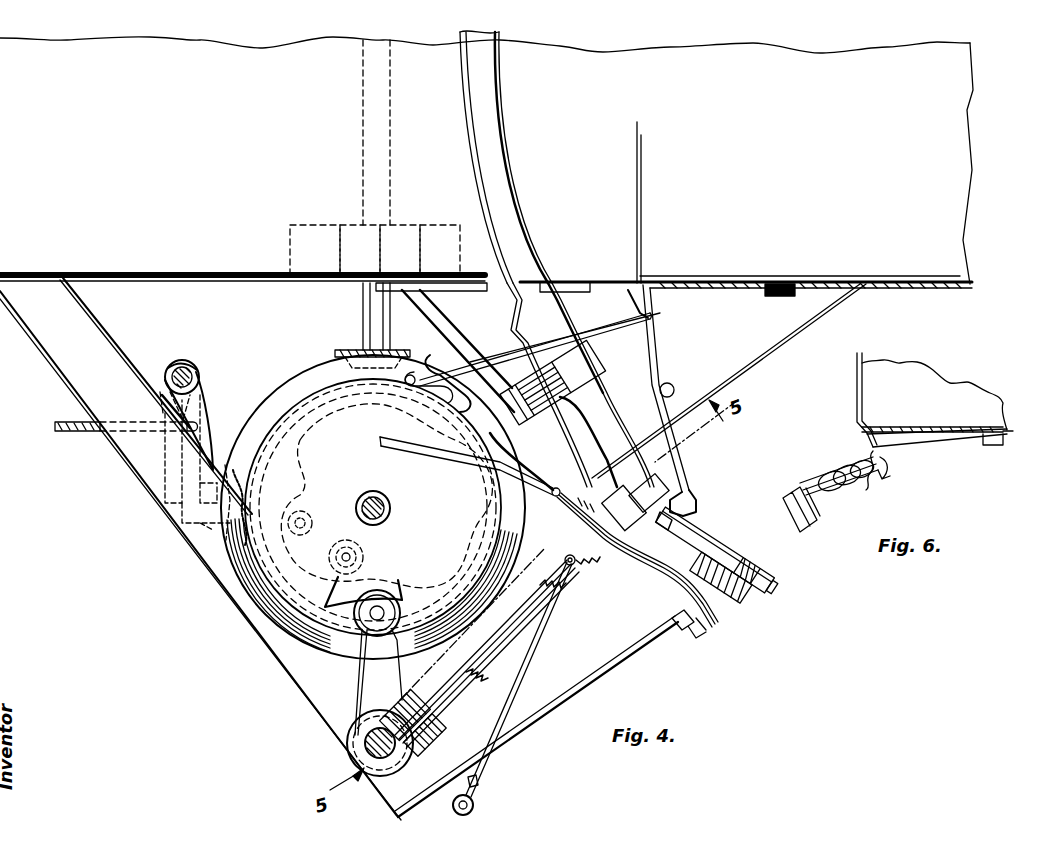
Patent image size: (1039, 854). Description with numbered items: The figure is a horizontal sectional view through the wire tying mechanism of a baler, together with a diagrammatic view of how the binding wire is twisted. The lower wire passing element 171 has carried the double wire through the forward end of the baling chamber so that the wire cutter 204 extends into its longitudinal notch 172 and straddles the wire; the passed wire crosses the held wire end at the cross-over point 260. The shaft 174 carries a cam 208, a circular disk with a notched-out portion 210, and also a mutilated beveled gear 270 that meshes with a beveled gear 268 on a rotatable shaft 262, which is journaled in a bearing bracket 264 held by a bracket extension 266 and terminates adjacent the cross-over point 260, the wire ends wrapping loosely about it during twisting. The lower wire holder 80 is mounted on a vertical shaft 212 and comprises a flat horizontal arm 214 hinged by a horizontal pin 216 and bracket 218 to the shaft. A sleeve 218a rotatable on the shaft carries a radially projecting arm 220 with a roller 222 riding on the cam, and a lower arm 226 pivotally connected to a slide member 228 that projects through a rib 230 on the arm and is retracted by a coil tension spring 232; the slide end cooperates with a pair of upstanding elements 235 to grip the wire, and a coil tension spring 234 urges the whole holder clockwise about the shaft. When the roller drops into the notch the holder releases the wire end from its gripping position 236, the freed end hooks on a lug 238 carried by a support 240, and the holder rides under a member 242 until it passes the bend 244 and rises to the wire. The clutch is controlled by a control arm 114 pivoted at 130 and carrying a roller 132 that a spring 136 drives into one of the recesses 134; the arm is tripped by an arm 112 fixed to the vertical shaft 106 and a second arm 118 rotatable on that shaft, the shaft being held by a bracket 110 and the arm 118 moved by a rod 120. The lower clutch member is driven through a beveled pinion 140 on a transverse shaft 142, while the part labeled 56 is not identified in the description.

The frame member 56 is at (38, 352).
The lower wire holder 80 is at (497, 680).
The vertical shaft 106 is at (185, 362).
The bracket 110 is at (160, 378).
The arm 112 is at (165, 465).
The clutch control arm 114 is at (200, 525).
The second arm 118 is at (205, 412).
The shaft or rod 120 is at (72, 433).
The pivot 130 is at (300, 510).
The roller 132 is at (358, 548).
The recesses 134 is at (386, 496).
The spring 136 is at (226, 455).
The beveled pinion 140 is at (346, 352).
The shaft 142 is at (376, 288).
The lower wire passing element 171 is at (475, 160).
The longitudinal notch 172 is at (690, 488).
The shaft 174 is at (375, 490).
The wire cutter 204 is at (676, 535).
The cam 208 is at (275, 575).
The notched-out portion 210 is at (350, 612).
The vertical shaft 212 is at (370, 742).
The arm 214 is at (570, 530).
The horizontal pin 216 is at (382, 705).
The bracket 218 is at (380, 725).
The sleeve 218a is at (350, 765).
The radially projecting arm 220 is at (362, 658).
The roller 222 is at (365, 640).
The lower arm 226 is at (480, 775).
The slide member 228 is at (535, 642).
The rib 230 is at (637, 560).
The coil tension spring 232 is at (532, 605).
The coil tension spring 234 is at (682, 632).
The upstanding elements 235 is at (662, 482).
The wire end gripping position 236 is at (438, 356).
The lug 238 is at (462, 366).
The support 240 is at (548, 482).
The member 242 is at (712, 556).
The bend 244 is at (582, 500).
The cross-over point 260 is at (640, 300).
The rotatable shaft 262 is at (608, 334).
The bearing bracket 264 is at (610, 363).
The bracket extension 266 is at (558, 290).
The beveled gear 268 is at (417, 400).
The mutilated beveled gear 270 is at (305, 392).